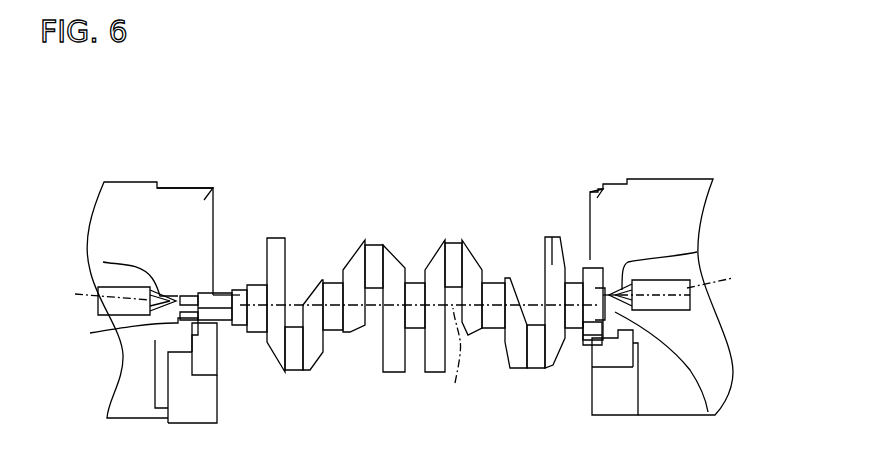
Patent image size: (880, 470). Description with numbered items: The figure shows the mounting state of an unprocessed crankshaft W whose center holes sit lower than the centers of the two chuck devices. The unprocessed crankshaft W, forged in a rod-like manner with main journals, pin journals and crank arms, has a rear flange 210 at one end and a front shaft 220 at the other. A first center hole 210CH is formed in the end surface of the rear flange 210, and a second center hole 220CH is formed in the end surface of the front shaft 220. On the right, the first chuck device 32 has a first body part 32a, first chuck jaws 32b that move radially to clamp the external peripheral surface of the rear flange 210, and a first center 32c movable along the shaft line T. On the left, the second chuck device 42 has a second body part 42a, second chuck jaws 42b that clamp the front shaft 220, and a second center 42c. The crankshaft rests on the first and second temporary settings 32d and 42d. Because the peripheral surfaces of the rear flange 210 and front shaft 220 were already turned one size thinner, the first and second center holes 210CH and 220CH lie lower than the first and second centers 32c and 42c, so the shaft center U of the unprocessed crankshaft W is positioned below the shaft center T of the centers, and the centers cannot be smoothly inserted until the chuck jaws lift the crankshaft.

The second chuck device 42 is at (163, 182).
The second body part 42a is at (213, 188).
The second chuck jaws 42b is at (205, 340).
The second center 42c is at (103, 262).
The second temporary setting 42d is at (90, 333).
The front shaft 220 is at (218, 292).
The second center hole 220CH is at (176, 298).
The shaft line T is at (404, 288).
The unprocessed crankshaft W is at (390, 240).
The shaft center U is at (458, 360).
The first chuck device 32 is at (640, 175).
The first body part 32a is at (590, 192).
The first chuck jaws 32b is at (598, 362).
The first center 32c is at (697, 252).
The first temporary setting 32d is at (585, 345).
The rear flange 210 is at (587, 267).
The first center hole 210CH is at (706, 390).